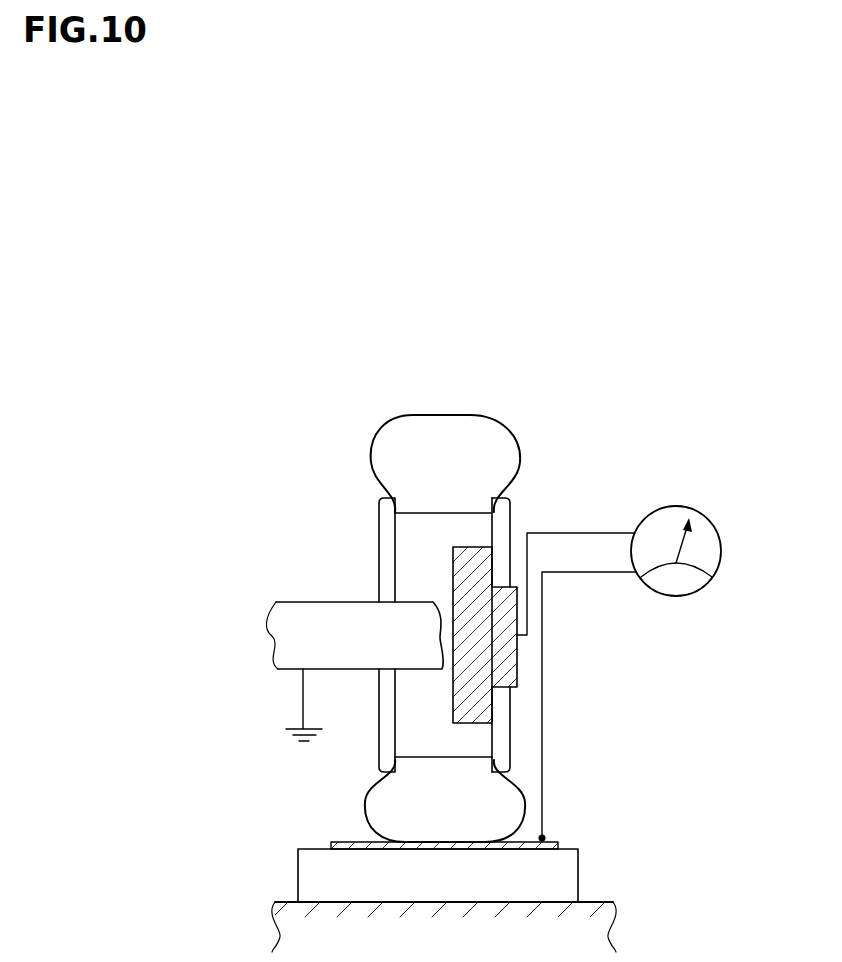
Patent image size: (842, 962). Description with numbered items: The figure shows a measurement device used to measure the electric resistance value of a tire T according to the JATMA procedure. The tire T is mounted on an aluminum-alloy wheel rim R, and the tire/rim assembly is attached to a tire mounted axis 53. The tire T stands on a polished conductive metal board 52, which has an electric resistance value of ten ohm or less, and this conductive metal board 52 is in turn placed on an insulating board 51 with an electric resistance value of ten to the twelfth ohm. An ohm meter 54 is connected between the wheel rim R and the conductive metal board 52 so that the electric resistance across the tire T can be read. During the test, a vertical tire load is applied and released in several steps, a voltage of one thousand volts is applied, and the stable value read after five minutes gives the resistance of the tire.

The tire T is at (474, 440).
The wheel rim R is at (385, 528).
The insulating board 51 is at (315, 878).
The conductive metal board 52 is at (357, 842).
The tire mounted axis 53 is at (322, 610).
The ohm meter 54 is at (720, 535).